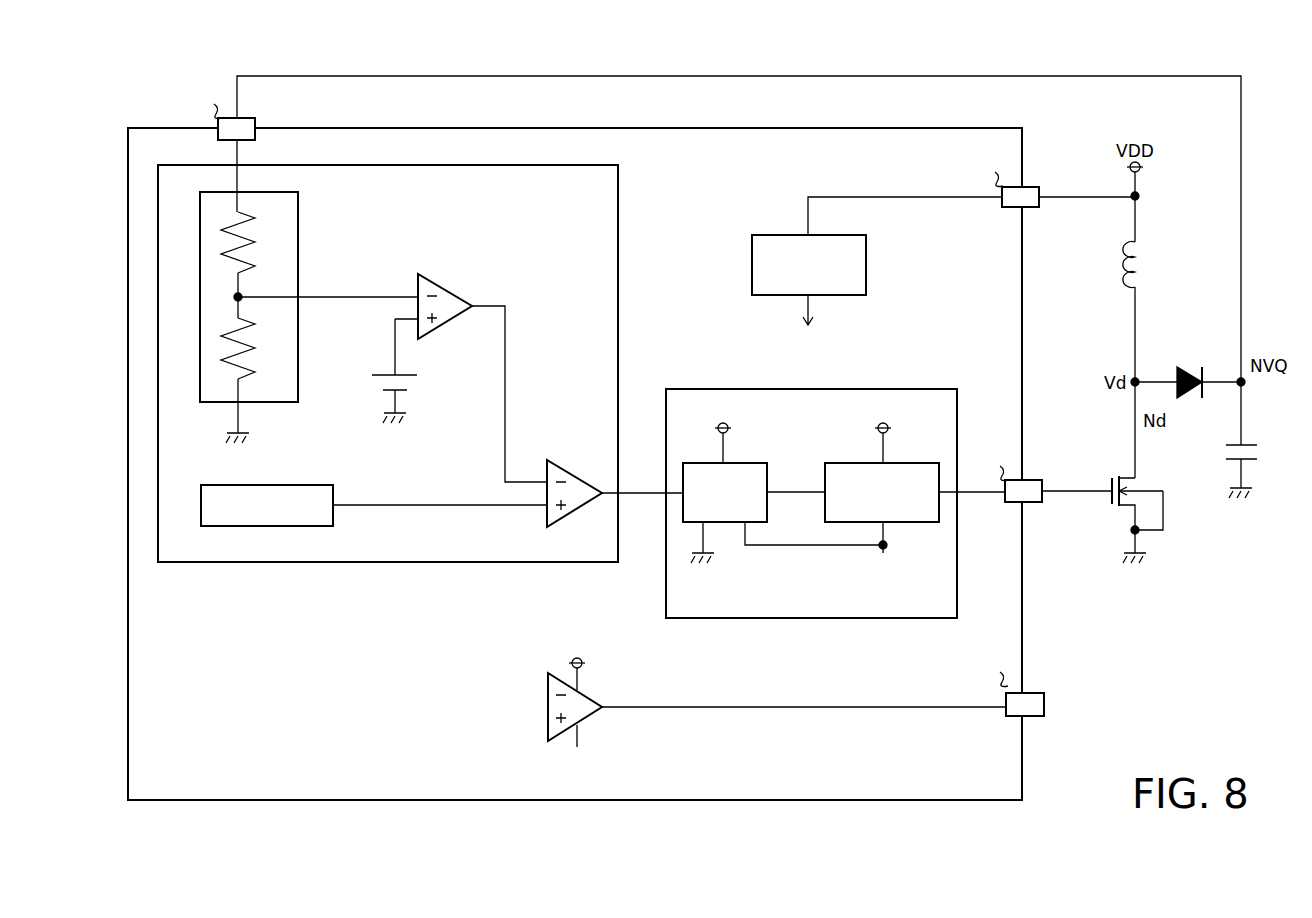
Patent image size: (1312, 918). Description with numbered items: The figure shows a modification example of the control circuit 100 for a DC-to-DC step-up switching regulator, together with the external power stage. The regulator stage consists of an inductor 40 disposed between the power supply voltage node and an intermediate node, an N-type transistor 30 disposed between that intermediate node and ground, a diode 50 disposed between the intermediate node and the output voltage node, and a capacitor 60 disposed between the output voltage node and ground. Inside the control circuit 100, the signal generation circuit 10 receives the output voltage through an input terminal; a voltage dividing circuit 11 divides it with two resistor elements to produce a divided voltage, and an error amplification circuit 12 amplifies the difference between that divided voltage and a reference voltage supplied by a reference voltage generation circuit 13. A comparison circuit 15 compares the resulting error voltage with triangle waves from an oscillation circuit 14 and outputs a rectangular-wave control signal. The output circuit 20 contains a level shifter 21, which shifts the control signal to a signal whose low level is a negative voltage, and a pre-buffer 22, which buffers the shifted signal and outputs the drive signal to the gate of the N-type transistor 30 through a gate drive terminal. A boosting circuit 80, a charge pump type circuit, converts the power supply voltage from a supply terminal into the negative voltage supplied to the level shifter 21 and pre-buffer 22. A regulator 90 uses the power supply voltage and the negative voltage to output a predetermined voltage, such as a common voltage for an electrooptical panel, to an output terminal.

The control circuit 100 is at (196, 800).
The signal generation circuit 10 is at (618, 181).
The voltage dividing circuit 11 is at (298, 218).
The error amplification circuit 12 is at (445, 285).
The reference voltage generation circuit 13 is at (372, 375).
The oscillation circuit 14 is at (266, 485).
The comparison circuit 15 is at (575, 477).
The output circuit 20 is at (813, 618).
The level shifter 21 is at (745, 463).
The pre-buffer 22 is at (900, 463).
The N-type transistor 30 is at (1124, 478).
The inductor 40 is at (1142, 262).
The diode 50 is at (1185, 367).
The capacitor 60 is at (1228, 445).
The boosting circuit 80 is at (866, 265).
The regulator 90 is at (583, 688).